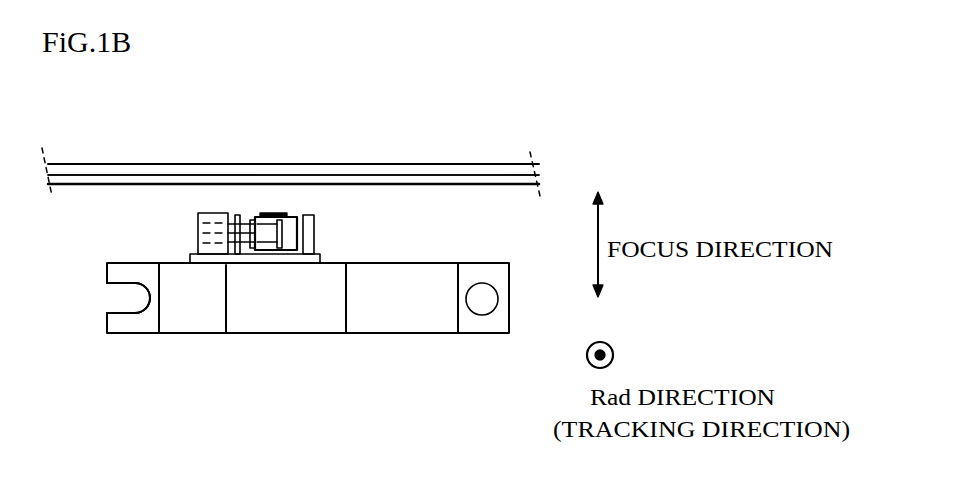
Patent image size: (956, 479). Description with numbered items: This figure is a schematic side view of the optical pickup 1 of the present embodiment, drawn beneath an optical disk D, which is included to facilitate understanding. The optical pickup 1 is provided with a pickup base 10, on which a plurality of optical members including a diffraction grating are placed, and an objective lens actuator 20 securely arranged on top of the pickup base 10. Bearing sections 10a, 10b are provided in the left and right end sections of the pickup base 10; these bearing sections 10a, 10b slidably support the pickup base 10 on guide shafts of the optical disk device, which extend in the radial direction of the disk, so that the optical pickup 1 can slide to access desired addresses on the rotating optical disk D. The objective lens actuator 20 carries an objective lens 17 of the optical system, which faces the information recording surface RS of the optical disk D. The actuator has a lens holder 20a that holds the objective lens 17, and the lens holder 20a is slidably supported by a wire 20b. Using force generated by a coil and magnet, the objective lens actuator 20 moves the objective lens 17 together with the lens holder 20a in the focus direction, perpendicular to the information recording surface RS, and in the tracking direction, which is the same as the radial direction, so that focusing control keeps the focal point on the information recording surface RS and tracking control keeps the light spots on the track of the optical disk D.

The optical pickup 1 is at (445, 253).
The pickup base 10 is at (400, 335).
The bearing section 10a is at (503, 270).
The bearing section 10b is at (114, 277).
The objective lens actuator 20 is at (183, 222).
The lens holder 20a is at (293, 223).
The wire 20b is at (253, 213).
The objective lens 17 is at (273, 213).
The optical disk D is at (295, 167).
The information recording surface RS is at (452, 177).